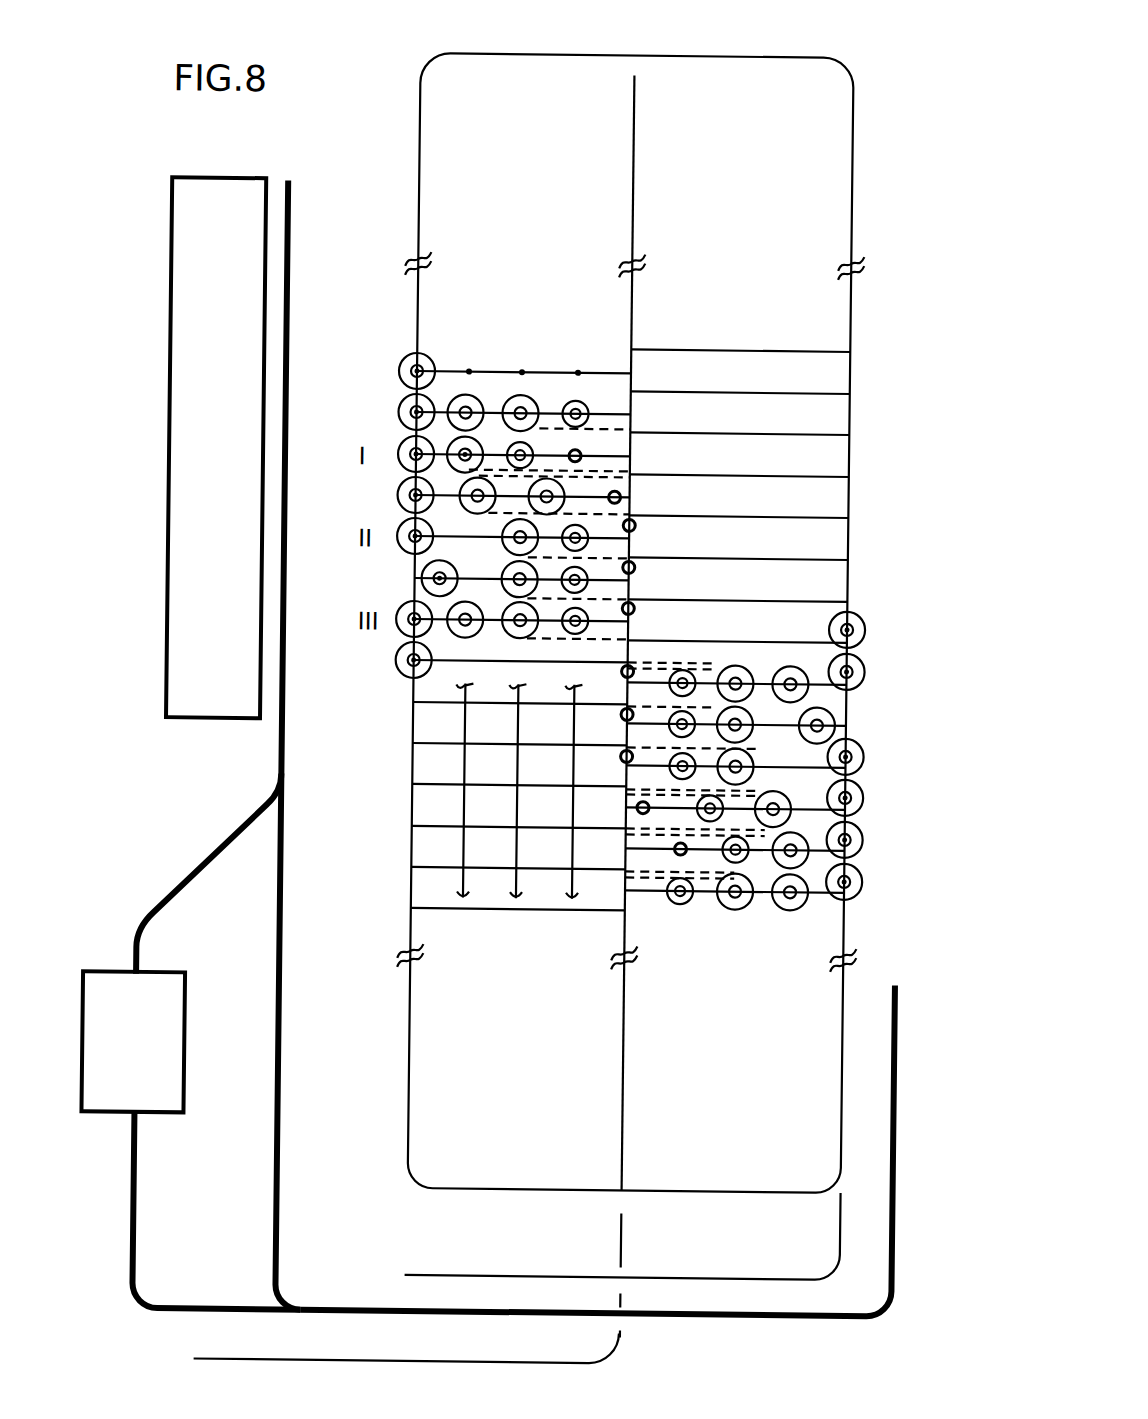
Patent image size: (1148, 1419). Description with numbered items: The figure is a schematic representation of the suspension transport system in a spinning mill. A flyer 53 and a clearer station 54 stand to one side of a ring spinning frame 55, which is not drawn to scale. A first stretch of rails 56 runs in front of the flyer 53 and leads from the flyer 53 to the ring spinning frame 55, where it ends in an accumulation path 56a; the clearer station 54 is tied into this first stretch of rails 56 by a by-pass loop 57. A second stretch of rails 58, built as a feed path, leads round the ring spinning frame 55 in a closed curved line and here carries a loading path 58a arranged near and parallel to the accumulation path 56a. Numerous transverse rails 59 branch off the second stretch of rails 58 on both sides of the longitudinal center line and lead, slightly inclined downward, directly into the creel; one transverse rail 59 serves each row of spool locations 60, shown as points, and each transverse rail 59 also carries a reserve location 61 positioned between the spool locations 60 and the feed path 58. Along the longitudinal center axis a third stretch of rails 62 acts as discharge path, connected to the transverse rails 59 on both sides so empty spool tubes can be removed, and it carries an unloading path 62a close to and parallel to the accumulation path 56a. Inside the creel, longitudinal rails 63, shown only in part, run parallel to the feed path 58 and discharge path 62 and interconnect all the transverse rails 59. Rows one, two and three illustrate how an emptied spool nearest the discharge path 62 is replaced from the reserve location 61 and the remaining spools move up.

The flyer 53 is at (236, 459).
The clearer station 54 is at (161, 1060).
The ring spinning frame 55 is at (868, 76).
The first stretch of rails 56 is at (288, 346).
The accumulation path 56a is at (775, 1310).
The by-pass loop 57 is at (144, 1212).
The second stretch of rails 58 is at (851, 176).
The loading path 58a is at (435, 1275).
The transverse rails 59 is at (731, 388).
The spool locations 60 is at (522, 371).
The reserve location 61 is at (469, 371).
The third stretch of rails 62 is at (633, 161).
The unloading path 62a is at (541, 1359).
The longitudinal rails 63 is at (474, 903).